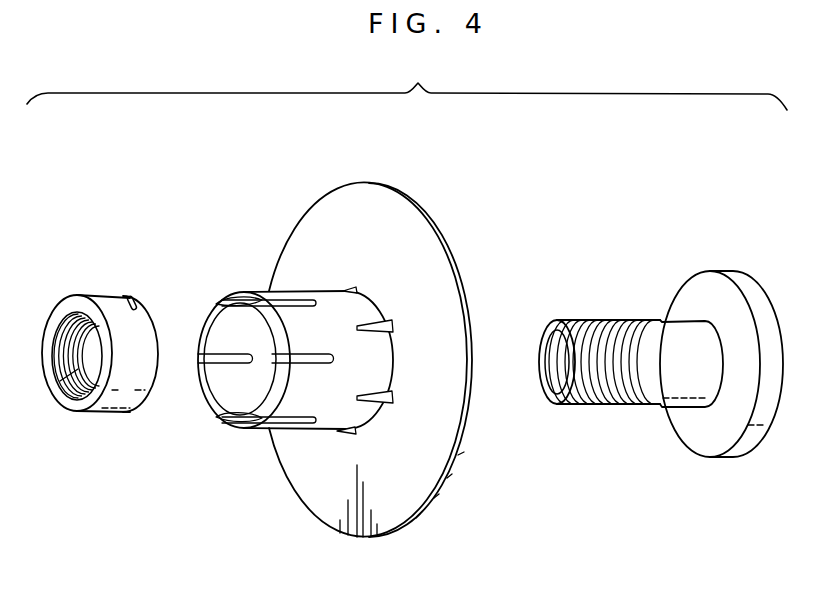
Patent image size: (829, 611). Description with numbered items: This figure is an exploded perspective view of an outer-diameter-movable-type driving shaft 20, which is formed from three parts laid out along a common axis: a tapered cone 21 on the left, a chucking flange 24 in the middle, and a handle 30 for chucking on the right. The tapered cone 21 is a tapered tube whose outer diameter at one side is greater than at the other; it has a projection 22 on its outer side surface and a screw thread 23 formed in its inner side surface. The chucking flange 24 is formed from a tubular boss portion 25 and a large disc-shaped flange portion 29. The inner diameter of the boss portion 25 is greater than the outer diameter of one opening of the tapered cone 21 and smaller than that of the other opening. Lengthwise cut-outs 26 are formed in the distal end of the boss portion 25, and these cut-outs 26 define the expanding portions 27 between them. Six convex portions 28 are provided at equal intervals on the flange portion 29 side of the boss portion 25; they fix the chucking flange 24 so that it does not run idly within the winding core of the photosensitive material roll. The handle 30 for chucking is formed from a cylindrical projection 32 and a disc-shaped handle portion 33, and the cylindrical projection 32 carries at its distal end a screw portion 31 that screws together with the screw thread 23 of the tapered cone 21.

The outer-diameter-movable-type driving shaft 20 is at (407, 82).
The tapered cone 21 is at (108, 284).
The projection 22 is at (138, 296).
The screw thread 23 is at (70, 375).
The chucking flange 24 is at (433, 183).
The boss portion 25 is at (345, 387).
The cut-outs 26 is at (268, 428).
The expanding portions 27 is at (280, 417).
The convex portions 28 is at (408, 297).
The flange portion 29 is at (441, 324).
The handle for chucking 30 is at (661, 346).
The screw portion 31 is at (605, 409).
The cylindrical projection 32 is at (693, 388).
The handle portion 33 is at (771, 403).